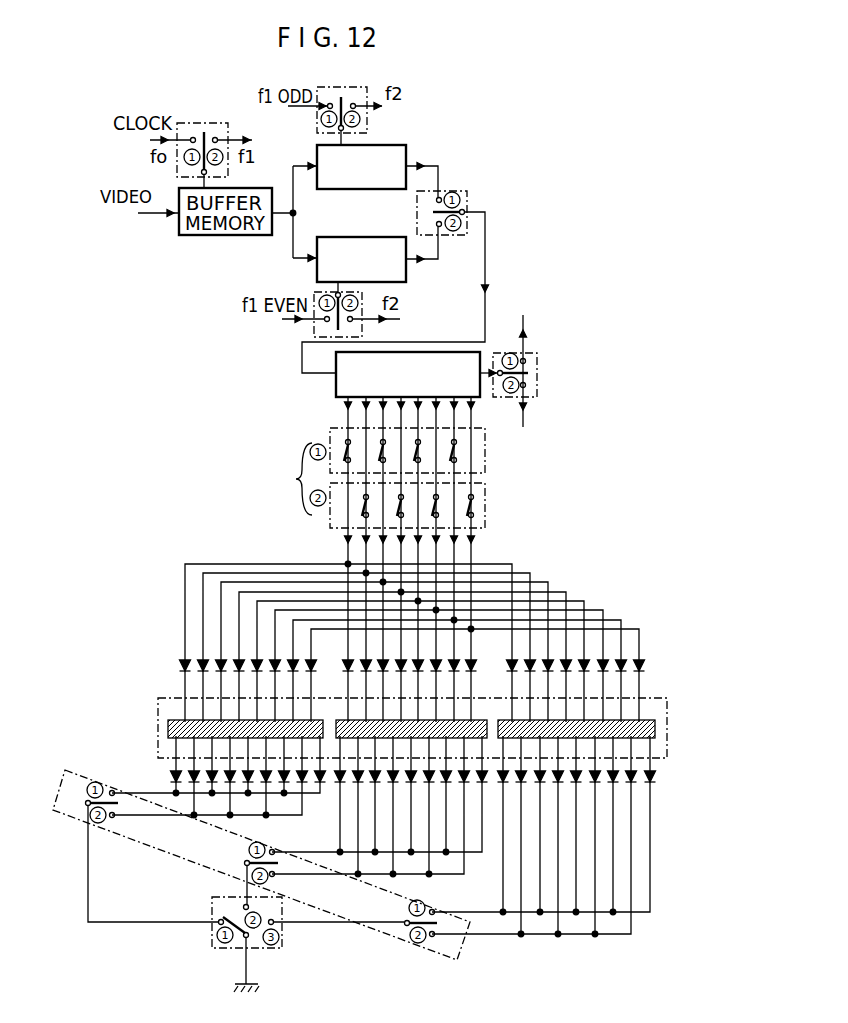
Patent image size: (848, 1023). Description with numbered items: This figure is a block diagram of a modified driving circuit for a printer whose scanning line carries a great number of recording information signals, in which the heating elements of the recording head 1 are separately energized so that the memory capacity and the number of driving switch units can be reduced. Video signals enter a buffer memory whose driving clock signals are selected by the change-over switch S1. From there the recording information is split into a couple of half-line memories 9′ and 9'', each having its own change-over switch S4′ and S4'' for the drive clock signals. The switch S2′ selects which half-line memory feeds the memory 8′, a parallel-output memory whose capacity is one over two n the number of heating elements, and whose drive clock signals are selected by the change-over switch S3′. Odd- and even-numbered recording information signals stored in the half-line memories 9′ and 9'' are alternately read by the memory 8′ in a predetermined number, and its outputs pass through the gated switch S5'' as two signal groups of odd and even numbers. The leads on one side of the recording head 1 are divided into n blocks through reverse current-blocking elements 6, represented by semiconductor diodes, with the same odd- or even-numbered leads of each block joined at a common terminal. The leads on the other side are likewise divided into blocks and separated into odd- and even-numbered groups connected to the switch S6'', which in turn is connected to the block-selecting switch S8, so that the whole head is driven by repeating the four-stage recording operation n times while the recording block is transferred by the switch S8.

The change-over switch S1 is at (183, 122).
The change-over switch S4′ is at (359, 87).
The change-over switch S4'' is at (341, 303).
The ½ line memory 9′ is at (378, 145).
The ½ line memory 9'' is at (361, 242).
The switch S2′ is at (477, 183).
The memory 8′ is at (335, 384).
The change-over switch S3′ is at (537, 387).
The gated switch S5'' is at (373, 478).
The reverse current-blocking elements 6 is at (183, 661).
The recording head 1 is at (158, 740).
The switch S6'' is at (261, 852).
The block-selecting switch S8 is at (213, 924).